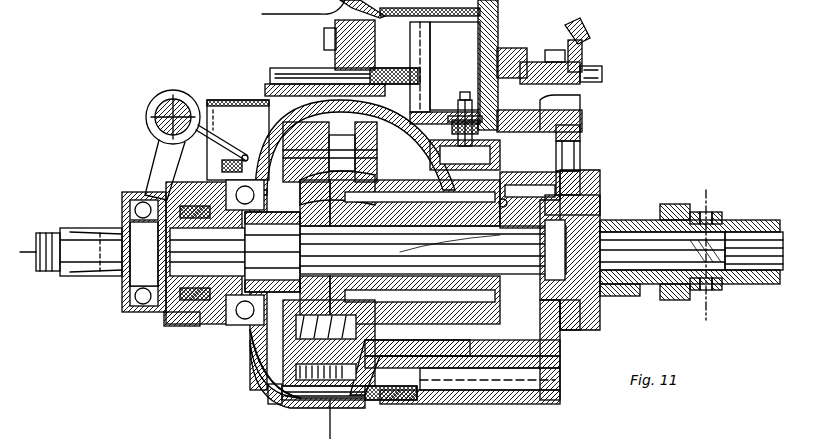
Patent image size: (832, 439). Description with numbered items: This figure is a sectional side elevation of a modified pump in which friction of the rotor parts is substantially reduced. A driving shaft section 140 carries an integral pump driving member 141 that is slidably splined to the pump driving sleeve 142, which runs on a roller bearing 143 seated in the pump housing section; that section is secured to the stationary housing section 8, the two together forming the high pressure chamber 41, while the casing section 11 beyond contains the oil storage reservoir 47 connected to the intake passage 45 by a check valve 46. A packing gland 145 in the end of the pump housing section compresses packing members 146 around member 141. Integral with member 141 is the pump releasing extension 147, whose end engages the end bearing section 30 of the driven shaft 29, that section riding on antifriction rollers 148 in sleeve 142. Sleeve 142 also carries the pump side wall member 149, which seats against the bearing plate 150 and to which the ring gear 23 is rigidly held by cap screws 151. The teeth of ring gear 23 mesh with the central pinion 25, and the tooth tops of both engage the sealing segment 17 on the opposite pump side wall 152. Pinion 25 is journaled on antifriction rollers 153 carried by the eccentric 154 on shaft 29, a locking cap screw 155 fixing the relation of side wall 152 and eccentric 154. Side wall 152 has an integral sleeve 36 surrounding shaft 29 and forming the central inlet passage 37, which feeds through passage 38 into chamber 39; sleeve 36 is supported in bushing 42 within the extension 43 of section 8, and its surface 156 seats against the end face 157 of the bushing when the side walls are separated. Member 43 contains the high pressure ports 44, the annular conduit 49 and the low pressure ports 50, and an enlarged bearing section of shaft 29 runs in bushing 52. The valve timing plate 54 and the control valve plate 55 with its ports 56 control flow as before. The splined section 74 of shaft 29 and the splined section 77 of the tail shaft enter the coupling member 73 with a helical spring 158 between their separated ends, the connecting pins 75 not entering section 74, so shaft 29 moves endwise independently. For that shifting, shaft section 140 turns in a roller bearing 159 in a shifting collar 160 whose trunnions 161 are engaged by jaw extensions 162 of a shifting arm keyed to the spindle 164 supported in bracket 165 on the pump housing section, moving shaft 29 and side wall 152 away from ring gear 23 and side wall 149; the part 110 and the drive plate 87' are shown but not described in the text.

The bracket 165 is at (215, 95).
The casing section 11 is at (301, 11).
The high pressure chamber 41 is at (270, 68).
The ring gear 23 is at (300, 84).
The spindle 164 is at (165, 95).
The packing members 146 is at (202, 100).
The pump side wall member 149 is at (260, 100).
The pump releasing extension 147 is at (150, 190).
The bearing plate 150 is at (235, 145).
The pump side wall 152 is at (425, 100).
The surface 156 is at (436, 110).
The end face 157 is at (450, 115).
The check valve 46 is at (468, 100).
The oil storage reservoir 47 is at (505, 32).
The bracket 110 is at (590, 42).
The roller bearing 159 is at (135, 200).
The shifting collar 160 is at (120, 200).
The driving shaft section 140 is at (80, 230).
The jaw extensions 162 is at (75, 262).
The trunnions 161 is at (118, 268).
The pump driving sleeve 142 is at (170, 310).
The pump driving member 141 is at (176, 318).
The packing gland 145 is at (180, 330).
The roller bearing 143 is at (220, 328).
The end bearing section 30 is at (272, 252).
The driven shaft 29 is at (433, 241).
The sleeve 36 is at (415, 203).
The eccentric 154 is at (355, 203).
The bushing 42 is at (515, 200).
The pump inlet passage 37 is at (445, 300).
The chamber 39 is at (380, 305).
The oil intake passage 45 is at (560, 175).
The extension 43 is at (465, 155).
The central pinion 25 is at (370, 148).
The sealing segment 17 is at (370, 136).
The passage 38 is at (337, 189).
The control valve plate 55 is at (560, 118).
The valve timing plate 54 is at (580, 128).
The low pressure ports 50 is at (570, 150).
The ports 56 is at (570, 156).
The bushing 52 is at (600, 215).
The splined section 74 is at (620, 225).
The connecting pins 75 is at (625, 220).
The coupling member 73 is at (700, 212).
The splined section 77 is at (765, 230).
The helical spring 158 is at (685, 300).
The locking cap screw 155 is at (620, 293).
The annular fluid conduit 49 is at (480, 340).
The housing section 8 is at (462, 367).
The high pressure outlet ports 44 is at (540, 385).
The cap screws 151 is at (268, 400).
The antifriction rollers 148 is at (265, 395).
The antifriction rollers 153 is at (375, 330).
The line 87' is at (251, 419).